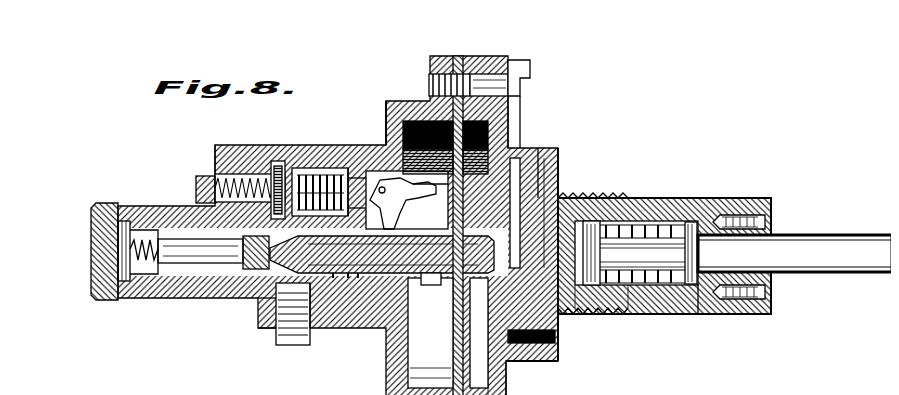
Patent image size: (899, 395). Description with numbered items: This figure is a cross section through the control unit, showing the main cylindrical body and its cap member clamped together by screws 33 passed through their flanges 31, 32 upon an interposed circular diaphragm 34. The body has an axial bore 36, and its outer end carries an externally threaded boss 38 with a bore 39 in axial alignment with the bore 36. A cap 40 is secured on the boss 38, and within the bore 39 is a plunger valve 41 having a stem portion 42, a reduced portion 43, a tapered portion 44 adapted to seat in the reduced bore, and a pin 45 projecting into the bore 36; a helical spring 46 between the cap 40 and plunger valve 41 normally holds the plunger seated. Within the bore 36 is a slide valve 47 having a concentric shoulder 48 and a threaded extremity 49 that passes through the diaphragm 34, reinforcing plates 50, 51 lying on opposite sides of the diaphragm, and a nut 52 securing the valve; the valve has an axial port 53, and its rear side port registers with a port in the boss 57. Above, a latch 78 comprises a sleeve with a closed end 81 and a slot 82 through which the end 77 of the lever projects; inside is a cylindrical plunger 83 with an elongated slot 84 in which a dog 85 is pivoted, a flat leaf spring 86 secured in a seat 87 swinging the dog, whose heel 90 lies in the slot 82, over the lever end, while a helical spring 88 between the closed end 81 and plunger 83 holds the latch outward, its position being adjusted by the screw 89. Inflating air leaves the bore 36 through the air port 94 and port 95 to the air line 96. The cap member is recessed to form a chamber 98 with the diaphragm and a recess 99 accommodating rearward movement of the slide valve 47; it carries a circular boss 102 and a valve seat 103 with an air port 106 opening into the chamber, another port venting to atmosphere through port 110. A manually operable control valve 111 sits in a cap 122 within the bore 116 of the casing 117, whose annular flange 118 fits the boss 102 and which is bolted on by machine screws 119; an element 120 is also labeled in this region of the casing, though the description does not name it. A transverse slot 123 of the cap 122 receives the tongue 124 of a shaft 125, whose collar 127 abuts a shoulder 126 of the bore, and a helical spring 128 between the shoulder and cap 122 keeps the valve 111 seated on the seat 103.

The flange 31 is at (436, 62).
The flange 32 is at (284, 393).
The screws 33 is at (512, 62).
The circular diaphragm 34 is at (500, 364).
The axial bore 36 is at (298, 166).
The boss 38 is at (185, 203).
The bore 39 is at (165, 275).
The cap 40 is at (92, 227).
The plunger valve 41 is at (142, 215).
The stem portion 42 is at (110, 243).
The reduced portion 43 is at (210, 257).
The tapered portion 44 is at (235, 260).
The pin 45 is at (250, 262).
The helical spring 46 is at (105, 262).
The slide valve 47 is at (305, 282).
The concentric shoulder 48 is at (440, 300).
The threaded extremity 49 is at (550, 176).
The reinforcing plate 50 is at (440, 328).
The reinforcing plate 51 is at (506, 150).
The nut 52 is at (502, 356).
The axial port 53 is at (378, 290).
The boss 57 is at (430, 268).
The end of lever 77 is at (350, 270).
The latch 78 is at (270, 158).
The closed end 81 is at (232, 145).
The slot 82 is at (340, 262).
The cylindrical plunger 83 is at (338, 168).
The elongated slot 84 is at (388, 140).
The dog 85 is at (374, 172).
The flat leaf spring 86 is at (390, 172).
The seat 87 is at (349, 175).
The helical spring 88 is at (318, 166).
The screw 89 is at (195, 172).
The heel 90 is at (325, 262).
The air port 94 is at (262, 300).
The port 95 is at (266, 300).
The air line 96 is at (276, 330).
The chamber 98 is at (515, 122).
The recess 99 is at (520, 140).
The circular boss 102 is at (556, 160).
The valve seat 103 is at (578, 188).
The air port 106 is at (552, 326).
The port 110 is at (540, 145).
The manually operable control valve 111 is at (592, 213).
The bore 116 is at (680, 214).
The casing 117 is at (748, 306).
The annular flange 118 is at (548, 345).
The machine screws 119 is at (556, 338).
The bore wall 120 is at (617, 306).
The cap 122 is at (580, 318).
The transverse slot 123 is at (588, 308).
The tongue 124 is at (618, 217).
The shaft 125 is at (815, 234).
The shoulder 126 is at (722, 207).
The collar 127 is at (700, 306).
The helical spring 128 is at (706, 214).